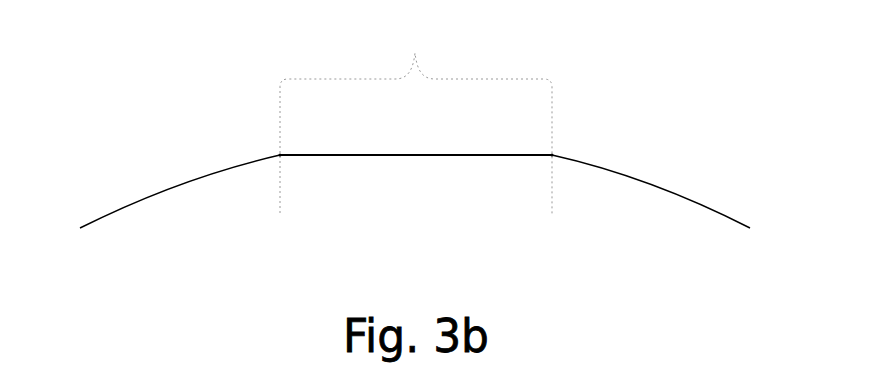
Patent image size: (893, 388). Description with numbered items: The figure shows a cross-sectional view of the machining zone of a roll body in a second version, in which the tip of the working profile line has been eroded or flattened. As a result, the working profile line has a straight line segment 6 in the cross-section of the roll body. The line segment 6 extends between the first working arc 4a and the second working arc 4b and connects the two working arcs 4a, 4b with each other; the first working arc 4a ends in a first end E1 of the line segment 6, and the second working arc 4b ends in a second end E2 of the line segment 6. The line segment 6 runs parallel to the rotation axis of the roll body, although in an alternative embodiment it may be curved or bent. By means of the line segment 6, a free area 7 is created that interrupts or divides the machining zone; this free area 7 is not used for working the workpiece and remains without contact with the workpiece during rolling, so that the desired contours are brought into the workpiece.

The first working arc 4a is at (142, 188).
The second working arc 4b is at (688, 188).
The line segment 6 is at (431, 188).
The free area 7 is at (416, 120).
The first end E1 is at (277, 151).
The second end E2 is at (555, 151).